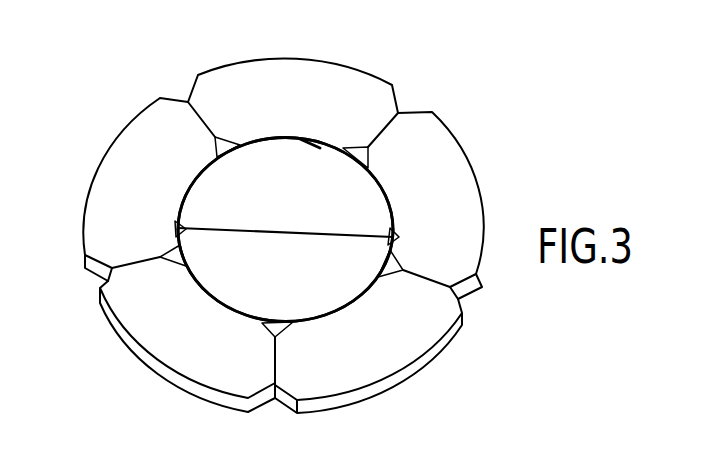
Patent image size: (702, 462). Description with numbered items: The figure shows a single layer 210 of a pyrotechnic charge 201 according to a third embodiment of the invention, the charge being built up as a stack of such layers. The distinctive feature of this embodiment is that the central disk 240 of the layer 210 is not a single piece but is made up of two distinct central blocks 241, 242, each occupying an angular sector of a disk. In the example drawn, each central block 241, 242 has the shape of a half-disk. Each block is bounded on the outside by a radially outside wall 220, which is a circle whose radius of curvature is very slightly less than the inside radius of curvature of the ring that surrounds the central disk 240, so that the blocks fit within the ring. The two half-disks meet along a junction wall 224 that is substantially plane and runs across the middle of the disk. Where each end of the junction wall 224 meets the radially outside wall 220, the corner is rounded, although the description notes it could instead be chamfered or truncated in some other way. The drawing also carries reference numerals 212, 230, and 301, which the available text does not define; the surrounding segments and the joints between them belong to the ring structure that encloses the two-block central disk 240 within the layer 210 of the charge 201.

The pyrotechnic charge 201 is at (470, 72).
The layer 210 is at (470, 120).
The petal segment 212 is at (213, 82).
The radially outside wall 220 is at (280, 137).
The junction wall 224 is at (280, 228).
The joint 230 is at (177, 223).
The central disk 240 is at (312, 153).
The central block 241 is at (212, 195).
The central block 242 is at (217, 283).
The reference numeral 301 is at (530, 452).